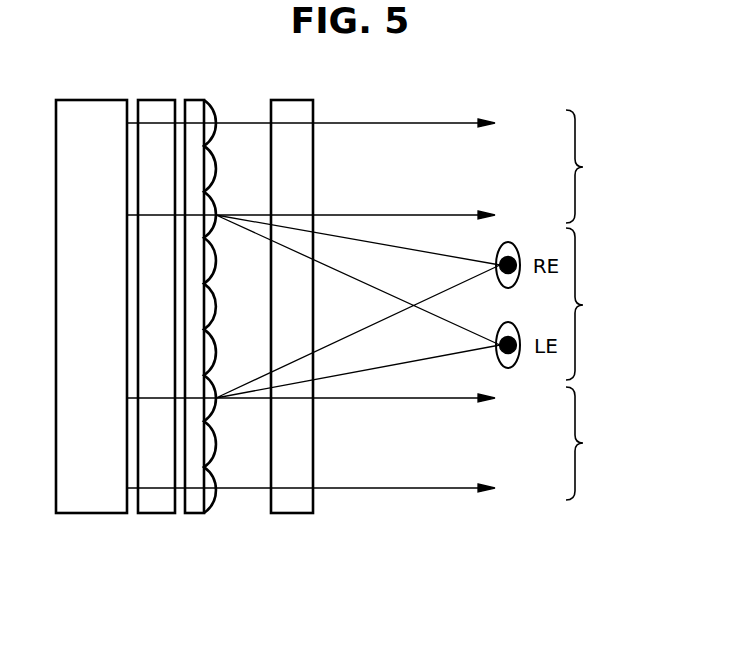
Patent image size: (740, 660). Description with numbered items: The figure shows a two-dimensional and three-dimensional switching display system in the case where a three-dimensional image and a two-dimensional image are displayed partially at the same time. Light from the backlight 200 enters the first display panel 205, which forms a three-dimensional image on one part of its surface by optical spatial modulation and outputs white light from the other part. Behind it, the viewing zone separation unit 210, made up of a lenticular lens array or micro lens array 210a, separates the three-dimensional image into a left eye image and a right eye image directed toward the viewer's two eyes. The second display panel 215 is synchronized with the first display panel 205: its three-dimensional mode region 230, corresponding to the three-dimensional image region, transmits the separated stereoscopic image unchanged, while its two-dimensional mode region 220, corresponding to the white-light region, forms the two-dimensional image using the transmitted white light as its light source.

The backlight 200 is at (83, 503).
The first display panel 205 is at (158, 503).
The viewing zone separation unit 210 is at (219, 364).
The micro lens array 210a is at (219, 500).
The second display panel 215 is at (293, 502).
The 2D mode region 220 is at (599, 305).
The 3D mode region 230 is at (599, 304).